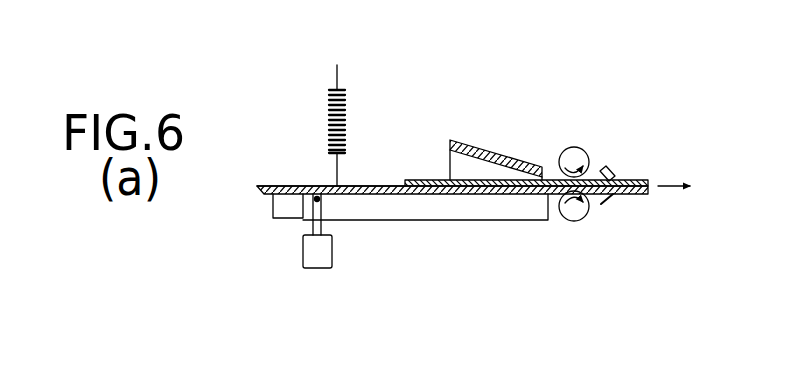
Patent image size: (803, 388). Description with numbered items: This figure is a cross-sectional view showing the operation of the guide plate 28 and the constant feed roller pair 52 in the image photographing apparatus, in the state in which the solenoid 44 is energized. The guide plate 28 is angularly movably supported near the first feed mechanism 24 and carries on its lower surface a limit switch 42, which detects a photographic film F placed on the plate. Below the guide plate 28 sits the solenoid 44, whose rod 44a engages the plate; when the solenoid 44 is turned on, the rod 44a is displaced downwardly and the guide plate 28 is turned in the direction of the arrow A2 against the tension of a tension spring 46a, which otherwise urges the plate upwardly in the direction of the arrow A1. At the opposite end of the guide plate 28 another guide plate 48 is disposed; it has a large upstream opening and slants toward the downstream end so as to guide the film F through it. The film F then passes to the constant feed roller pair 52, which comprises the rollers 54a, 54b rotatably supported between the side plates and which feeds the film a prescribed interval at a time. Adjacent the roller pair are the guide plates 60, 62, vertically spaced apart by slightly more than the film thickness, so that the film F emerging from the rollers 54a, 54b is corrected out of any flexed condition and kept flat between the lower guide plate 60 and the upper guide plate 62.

The first feed mechanism 24 is at (422, 64).
The guide plate 28 is at (416, 212).
The limit switch 42 is at (290, 219).
The solenoid 44 is at (320, 258).
The rod 44a is at (322, 207).
The tension spring 46a is at (334, 90).
The guide plate 48 is at (458, 131).
The constant feed roller pair 52 is at (568, 126).
The roller 54a is at (578, 219).
The roller 54b is at (585, 149).
The guide plate 60 is at (637, 197).
The guide plate 62 is at (634, 178).
The photographic film F is at (552, 194).
The arrow A1 is at (533, 124).
The arrow A2 is at (536, 144).